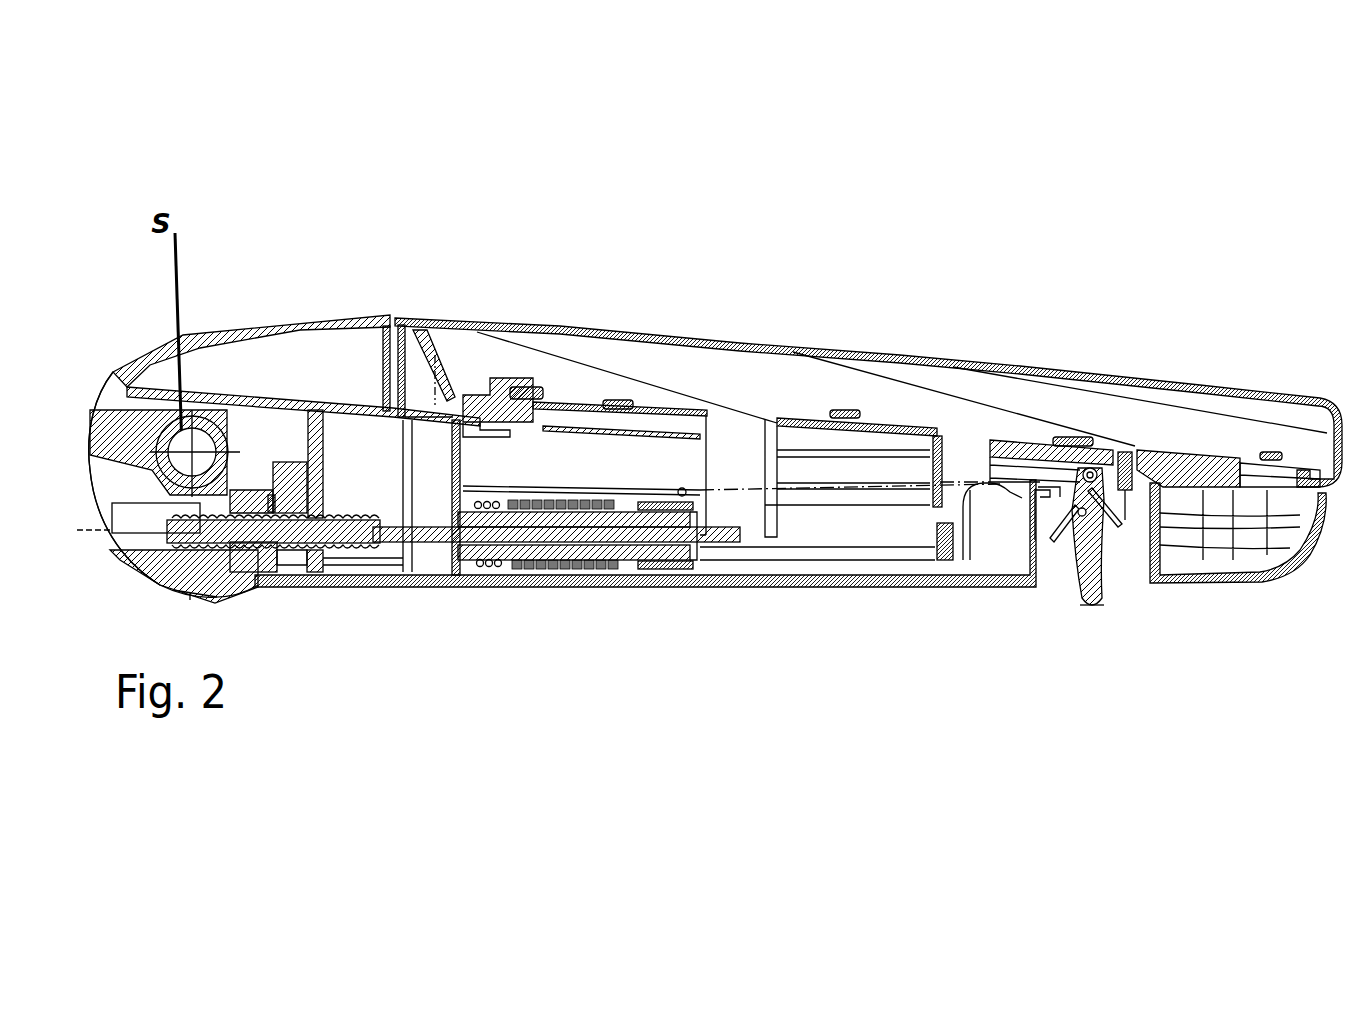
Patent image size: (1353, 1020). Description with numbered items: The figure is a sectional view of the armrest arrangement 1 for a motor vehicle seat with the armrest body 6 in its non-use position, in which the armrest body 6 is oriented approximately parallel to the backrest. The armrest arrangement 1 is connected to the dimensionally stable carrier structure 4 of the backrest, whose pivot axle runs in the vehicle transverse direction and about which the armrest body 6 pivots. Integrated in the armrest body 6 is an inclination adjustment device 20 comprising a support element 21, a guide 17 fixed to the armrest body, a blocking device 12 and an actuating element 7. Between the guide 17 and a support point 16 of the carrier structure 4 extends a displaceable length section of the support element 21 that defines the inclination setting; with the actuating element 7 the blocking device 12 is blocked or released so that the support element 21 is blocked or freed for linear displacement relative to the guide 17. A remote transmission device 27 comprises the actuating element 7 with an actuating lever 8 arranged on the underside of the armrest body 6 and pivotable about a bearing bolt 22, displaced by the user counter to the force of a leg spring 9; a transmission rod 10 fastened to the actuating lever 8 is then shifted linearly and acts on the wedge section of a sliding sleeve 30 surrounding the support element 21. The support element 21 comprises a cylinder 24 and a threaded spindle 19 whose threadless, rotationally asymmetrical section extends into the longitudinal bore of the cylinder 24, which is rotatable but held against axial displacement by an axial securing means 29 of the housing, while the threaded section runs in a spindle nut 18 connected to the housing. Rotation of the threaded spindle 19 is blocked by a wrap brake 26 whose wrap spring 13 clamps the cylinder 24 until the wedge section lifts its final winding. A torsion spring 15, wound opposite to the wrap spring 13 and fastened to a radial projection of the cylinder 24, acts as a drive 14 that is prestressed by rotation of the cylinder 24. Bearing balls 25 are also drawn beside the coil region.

The armrest arrangement 1 is at (250, 253).
The carrier structure 4 is at (112, 420).
The armrest body 6 is at (803, 338).
The actuating element 7 is at (1058, 592).
The actuating lever 8 is at (1090, 606).
The leg spring 9 is at (1118, 537).
The transmission rod 10 is at (853, 482).
The blocking device 12 is at (559, 575).
The wrap spring 13 is at (615, 500).
The drive 14 is at (478, 488).
The torsion spring 15 is at (554, 488).
The support point 16 is at (112, 395).
The guide 17 is at (292, 560).
The spindle nut 18 is at (233, 560).
The threaded spindle 19 is at (396, 515).
The inclination adjustment device 20 is at (275, 375).
The support element 21 is at (625, 570).
The bearing bolt 22 is at (1052, 541).
The cylinder 24 is at (630, 493).
The bearing balls 25 is at (487, 573).
The wrap brake 26 is at (602, 500).
The remote transmission device 27 is at (1006, 497).
The axial securing means 29 is at (458, 565).
The sliding sleeve 30 is at (687, 562).